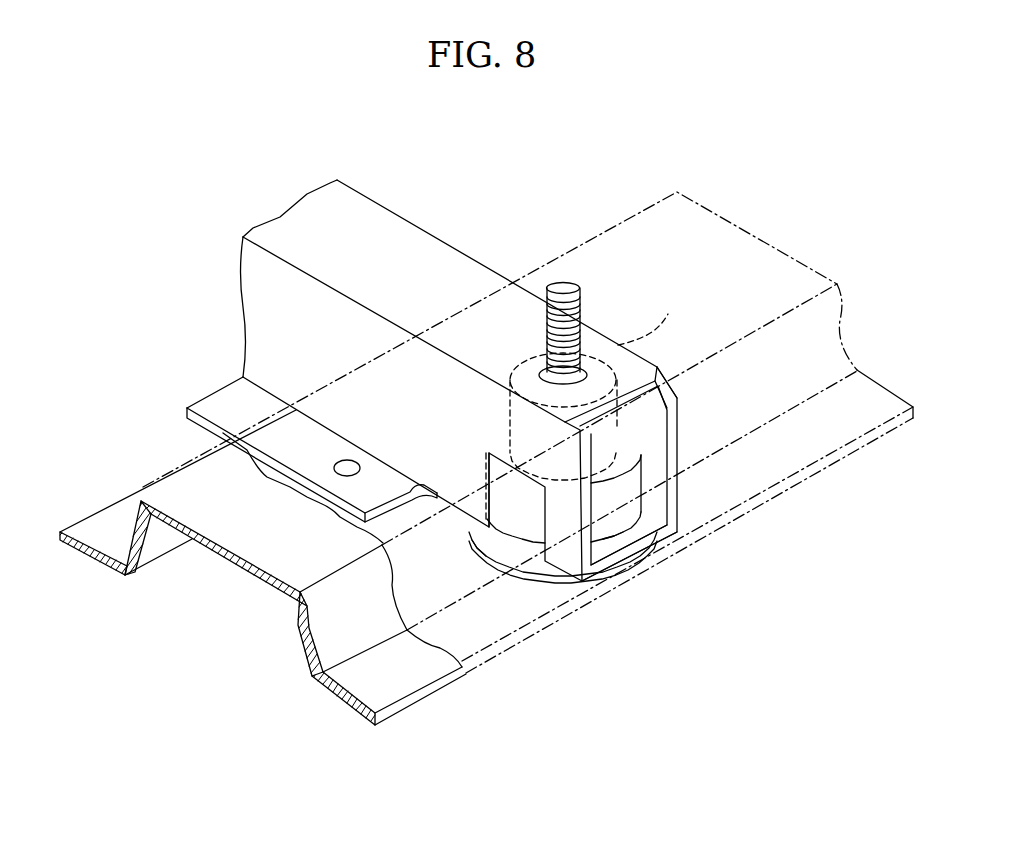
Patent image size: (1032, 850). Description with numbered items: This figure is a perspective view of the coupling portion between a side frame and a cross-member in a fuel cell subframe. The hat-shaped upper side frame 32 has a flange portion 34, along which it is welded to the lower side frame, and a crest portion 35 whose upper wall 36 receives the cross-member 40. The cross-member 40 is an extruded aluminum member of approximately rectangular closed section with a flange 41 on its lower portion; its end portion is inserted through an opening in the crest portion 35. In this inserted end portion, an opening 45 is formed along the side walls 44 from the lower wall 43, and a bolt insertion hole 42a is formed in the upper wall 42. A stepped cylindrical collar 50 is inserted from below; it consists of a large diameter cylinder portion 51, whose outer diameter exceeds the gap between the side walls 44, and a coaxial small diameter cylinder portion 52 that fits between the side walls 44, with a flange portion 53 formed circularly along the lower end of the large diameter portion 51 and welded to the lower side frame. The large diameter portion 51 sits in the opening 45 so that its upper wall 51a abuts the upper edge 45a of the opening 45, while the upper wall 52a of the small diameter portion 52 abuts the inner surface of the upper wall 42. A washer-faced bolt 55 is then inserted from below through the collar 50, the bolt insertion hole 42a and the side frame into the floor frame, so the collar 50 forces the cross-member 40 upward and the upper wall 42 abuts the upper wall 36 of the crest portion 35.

The upper side frame 32 is at (417, 702).
The flange portion 34 is at (93, 525).
The crest portion 35 is at (328, 627).
The upper wall 36 is at (187, 488).
The cross-member 40 is at (500, 373).
The flange 41 is at (213, 397).
The upper wall 42 is at (445, 272).
The bolt insertion hole 42a is at (590, 355).
The lower wall 43 is at (670, 533).
The side walls 44 is at (262, 277).
The opening 45 is at (540, 547).
The upper edge 45a is at (477, 467).
The stepped cylindrical collar 50 is at (557, 592).
The large diameter cylinder portion 51 is at (620, 530).
The upper wall 51a is at (672, 390).
The small diameter cylinder portion 52 is at (652, 528).
The upper wall 52a is at (650, 333).
The flange portion 53 is at (495, 558).
The washer-faced bolt 55 is at (565, 286).